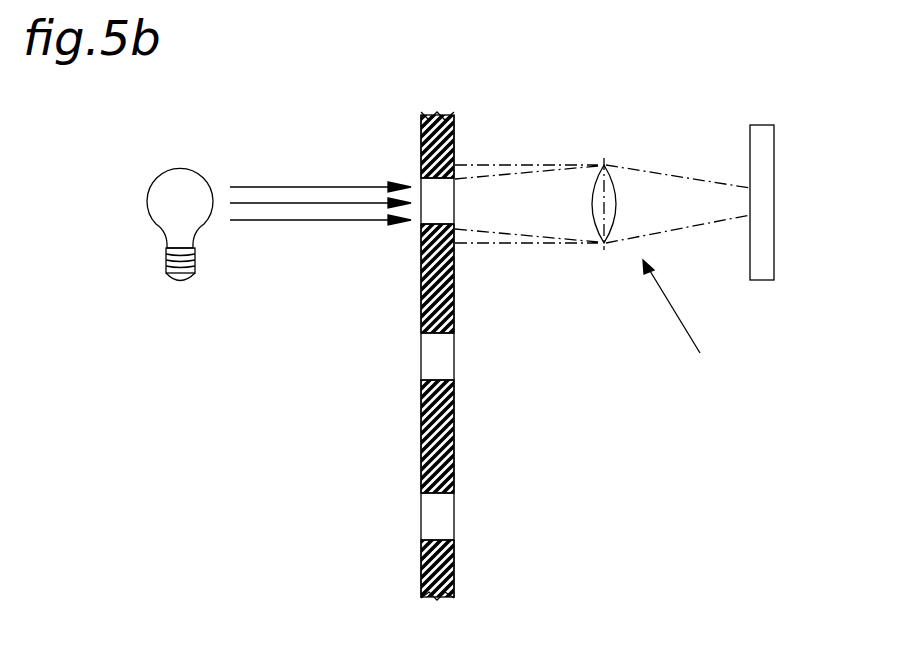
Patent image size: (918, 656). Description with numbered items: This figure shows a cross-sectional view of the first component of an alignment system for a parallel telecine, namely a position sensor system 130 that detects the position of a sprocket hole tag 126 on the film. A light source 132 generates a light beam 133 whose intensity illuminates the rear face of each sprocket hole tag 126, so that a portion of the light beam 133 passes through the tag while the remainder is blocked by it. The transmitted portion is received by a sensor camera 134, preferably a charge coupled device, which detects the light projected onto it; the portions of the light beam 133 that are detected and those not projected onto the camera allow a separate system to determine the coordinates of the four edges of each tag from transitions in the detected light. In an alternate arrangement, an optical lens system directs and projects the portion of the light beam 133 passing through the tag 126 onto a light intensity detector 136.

The sprocket hole tag 126 is at (434, 224).
The position sensor system 130 is at (602, 270).
The light source 132 is at (175, 225).
The light beam 133 is at (350, 220).
The sensor camera 134 is at (750, 153).
The light intensity detector 136 is at (597, 233).